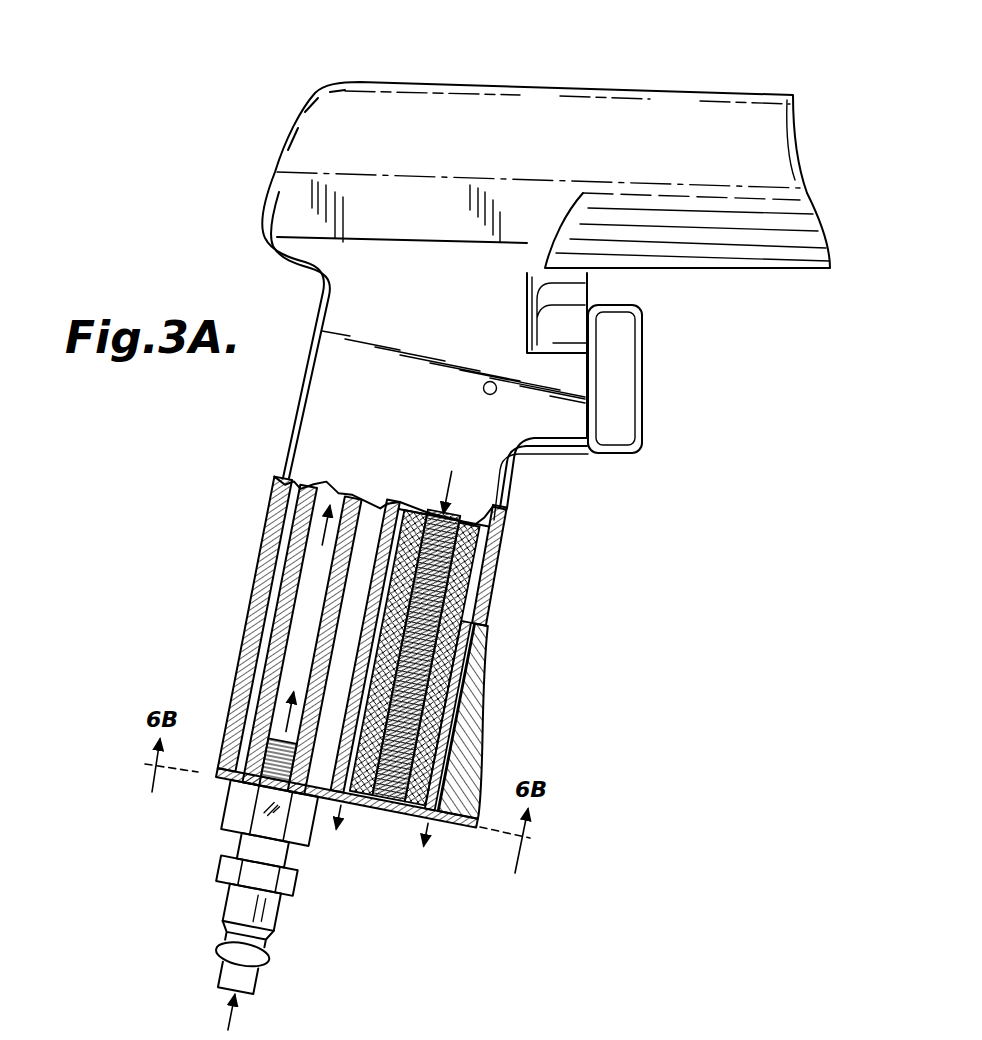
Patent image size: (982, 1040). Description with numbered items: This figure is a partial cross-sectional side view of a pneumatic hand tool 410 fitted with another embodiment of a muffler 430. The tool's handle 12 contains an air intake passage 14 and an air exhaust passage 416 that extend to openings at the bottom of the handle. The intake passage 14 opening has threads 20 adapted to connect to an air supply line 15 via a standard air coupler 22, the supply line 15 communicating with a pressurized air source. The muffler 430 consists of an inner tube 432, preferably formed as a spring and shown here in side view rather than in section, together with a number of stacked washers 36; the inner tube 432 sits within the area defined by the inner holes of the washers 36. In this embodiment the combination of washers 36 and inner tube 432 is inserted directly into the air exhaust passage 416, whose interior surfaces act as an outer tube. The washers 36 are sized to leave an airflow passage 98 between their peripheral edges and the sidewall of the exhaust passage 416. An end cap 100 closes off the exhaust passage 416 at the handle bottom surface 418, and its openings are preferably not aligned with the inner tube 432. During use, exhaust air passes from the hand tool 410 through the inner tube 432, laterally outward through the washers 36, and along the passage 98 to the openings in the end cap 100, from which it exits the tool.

The hand tool 410 is at (281, 82).
The muffler 430 is at (558, 538).
The inner tube 432 is at (492, 575).
The air exhaust passage 416 is at (485, 623).
The airflow passage 98 is at (472, 698).
The washers 36 is at (462, 722).
The handle bottom surface 418 is at (473, 777).
The end cap 100 is at (474, 828).
The handle 12 is at (262, 561).
The air intake passage 14 is at (307, 613).
The threads 20 is at (256, 748).
The air coupler 22 is at (230, 898).
The air supply line 15 is at (230, 975).